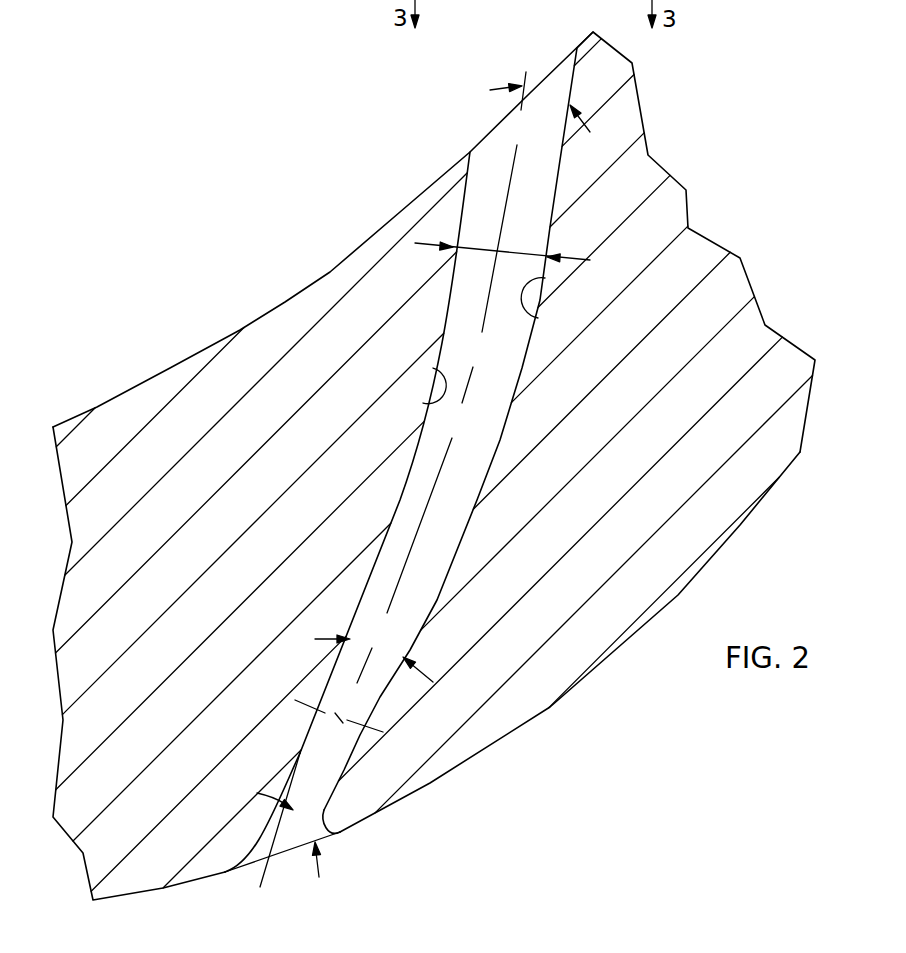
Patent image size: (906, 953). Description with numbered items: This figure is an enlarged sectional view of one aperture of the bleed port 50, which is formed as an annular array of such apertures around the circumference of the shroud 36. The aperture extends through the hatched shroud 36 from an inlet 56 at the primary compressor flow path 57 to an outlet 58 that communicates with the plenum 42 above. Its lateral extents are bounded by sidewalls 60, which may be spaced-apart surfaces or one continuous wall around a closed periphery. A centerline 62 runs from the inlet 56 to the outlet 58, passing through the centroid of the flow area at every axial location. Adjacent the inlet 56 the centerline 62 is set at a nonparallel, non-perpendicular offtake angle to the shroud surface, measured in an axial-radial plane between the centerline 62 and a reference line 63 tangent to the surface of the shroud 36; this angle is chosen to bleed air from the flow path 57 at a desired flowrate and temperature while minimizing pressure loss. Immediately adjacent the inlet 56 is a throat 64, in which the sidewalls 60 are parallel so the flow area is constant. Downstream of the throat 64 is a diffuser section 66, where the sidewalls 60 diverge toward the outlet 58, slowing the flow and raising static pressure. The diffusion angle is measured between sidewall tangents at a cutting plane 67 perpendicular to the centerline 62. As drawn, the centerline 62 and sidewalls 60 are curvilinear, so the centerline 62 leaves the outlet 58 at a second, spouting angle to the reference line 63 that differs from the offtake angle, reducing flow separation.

The shroud 36 is at (108, 454).
The plenum 42 is at (360, 88).
The bleed port 50 is at (348, 178).
The inlet 56 is at (259, 863).
The primary compressor flow path 57 is at (412, 900).
The outlet 58 is at (478, 143).
The sidewalls 60 is at (537, 318).
The centerline 62 is at (452, 433).
The reference line 63 is at (291, 852).
The throat 64 is at (330, 797).
The diffuser section 66 is at (522, 368).
The cutting plane 67 is at (526, 252).